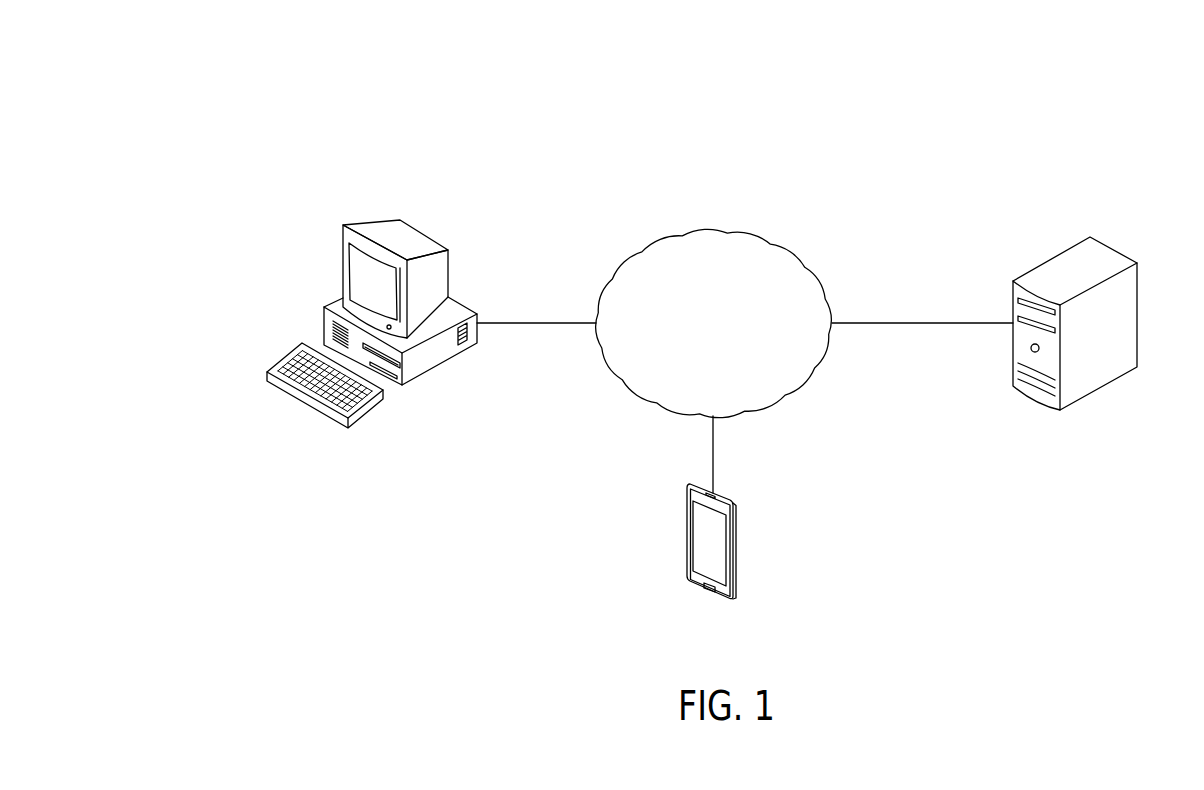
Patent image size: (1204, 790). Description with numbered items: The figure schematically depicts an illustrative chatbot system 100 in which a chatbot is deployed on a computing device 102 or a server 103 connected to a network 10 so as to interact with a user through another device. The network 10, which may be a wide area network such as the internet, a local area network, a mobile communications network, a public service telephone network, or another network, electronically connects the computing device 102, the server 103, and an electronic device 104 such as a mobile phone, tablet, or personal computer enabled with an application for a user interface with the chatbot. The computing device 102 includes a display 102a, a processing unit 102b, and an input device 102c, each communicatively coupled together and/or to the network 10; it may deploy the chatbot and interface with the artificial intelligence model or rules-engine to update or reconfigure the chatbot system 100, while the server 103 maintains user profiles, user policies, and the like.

The chatbot system 100 is at (192, 74).
The network 10 is at (794, 253).
The computing device 102 is at (447, 202).
The display 102a is at (343, 233).
The processing unit 102b is at (427, 365).
The input device 102c is at (360, 413).
The server 103 is at (1118, 233).
The electronic device 104 is at (760, 520).